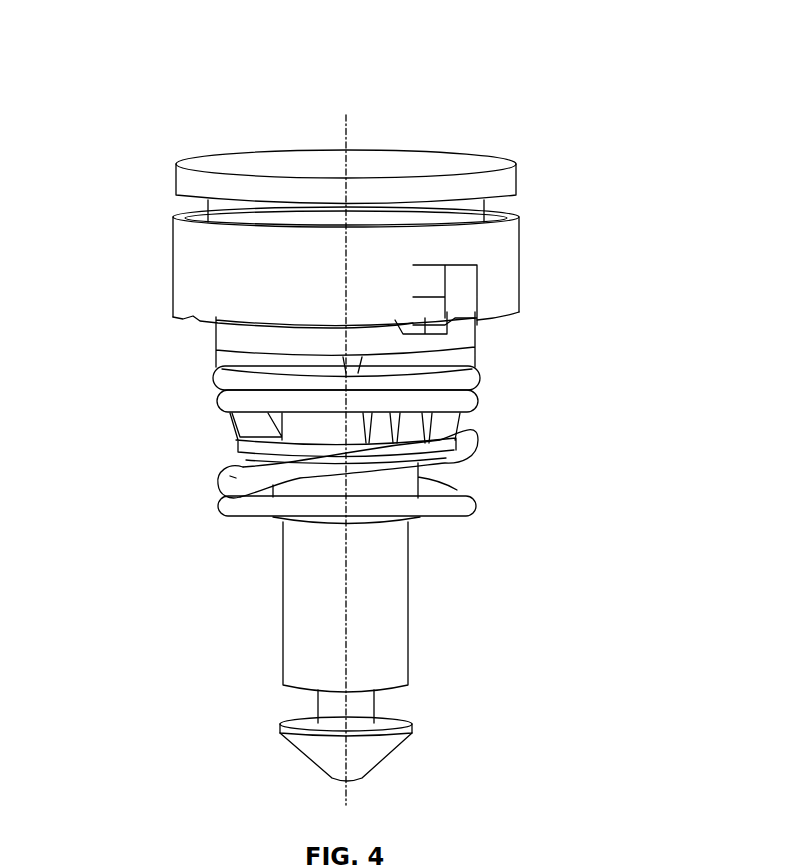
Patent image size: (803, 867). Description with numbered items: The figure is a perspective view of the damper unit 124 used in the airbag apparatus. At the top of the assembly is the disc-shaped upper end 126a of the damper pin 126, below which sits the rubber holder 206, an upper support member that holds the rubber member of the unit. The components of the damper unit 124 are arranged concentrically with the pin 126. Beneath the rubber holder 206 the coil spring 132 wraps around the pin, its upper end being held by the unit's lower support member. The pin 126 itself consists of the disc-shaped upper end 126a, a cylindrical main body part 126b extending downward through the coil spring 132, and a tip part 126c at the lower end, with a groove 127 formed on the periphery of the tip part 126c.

The damper unit 124 is at (523, 117).
The disc-shaped upper end 126a is at (193, 183).
The rubber holder 206 is at (508, 270).
The coil spring 132 is at (473, 498).
The damper pin 126 is at (413, 585).
The cylindrical main body part 126b is at (293, 593).
The groove 127 is at (323, 707).
The tip part 126c is at (375, 752).